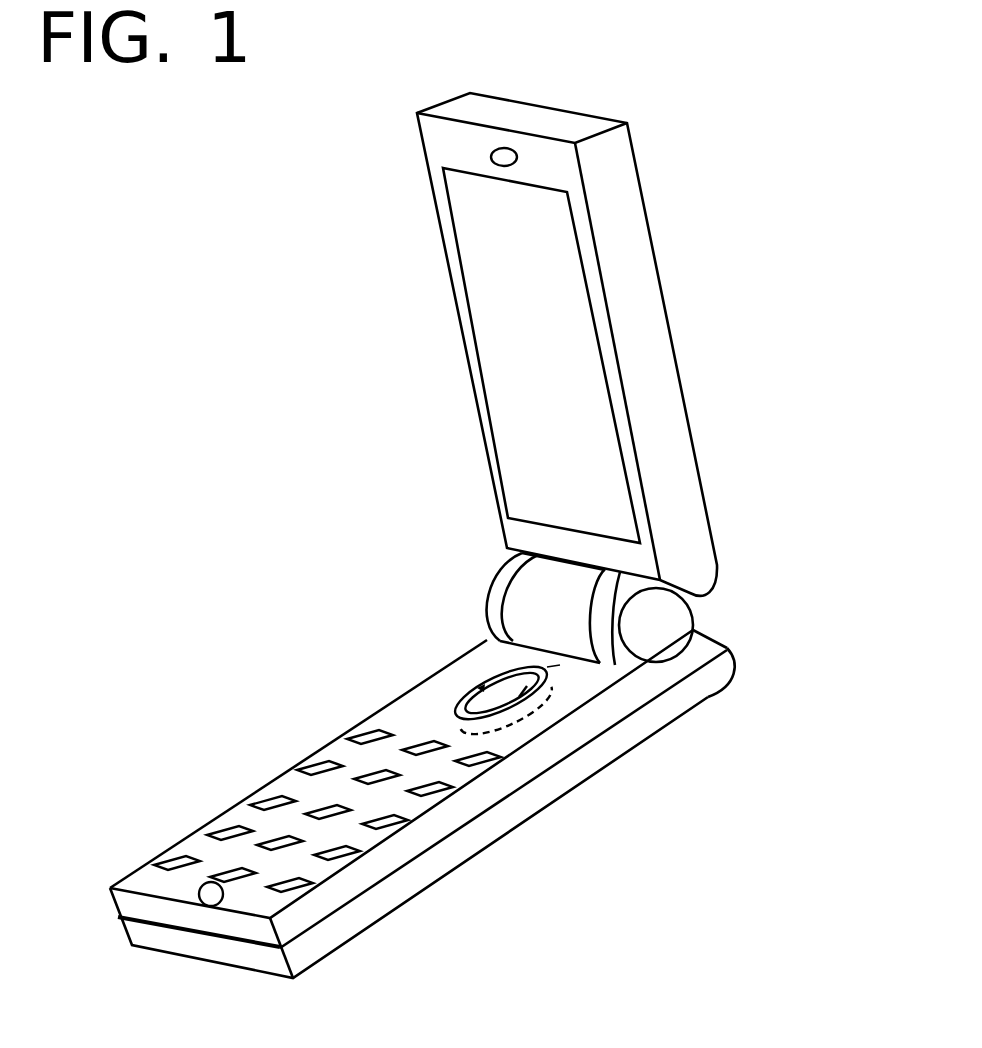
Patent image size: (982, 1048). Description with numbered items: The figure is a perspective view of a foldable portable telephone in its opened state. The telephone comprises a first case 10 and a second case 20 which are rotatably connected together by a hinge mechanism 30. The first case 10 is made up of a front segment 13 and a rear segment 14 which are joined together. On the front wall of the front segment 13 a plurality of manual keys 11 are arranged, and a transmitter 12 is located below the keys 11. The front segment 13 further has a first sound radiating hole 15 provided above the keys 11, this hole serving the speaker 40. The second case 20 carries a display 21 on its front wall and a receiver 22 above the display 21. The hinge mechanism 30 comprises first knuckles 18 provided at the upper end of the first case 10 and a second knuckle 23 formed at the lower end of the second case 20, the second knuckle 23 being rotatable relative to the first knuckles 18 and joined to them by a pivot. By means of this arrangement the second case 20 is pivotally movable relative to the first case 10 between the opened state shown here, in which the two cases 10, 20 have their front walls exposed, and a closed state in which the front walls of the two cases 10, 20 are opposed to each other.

The first case 10 is at (444, 804).
The manual keys 11 is at (360, 733).
The transmitter 12 is at (207, 897).
The front segment 13 is at (530, 763).
The rear segment 14 is at (498, 822).
The first sound radiating hole 15 is at (473, 690).
The first knuckles 18 is at (487, 605).
The second case 20 is at (657, 314).
The display 21 is at (497, 338).
The receiver 22 is at (493, 156).
The second knuckle 23 is at (523, 590).
The hinge mechanism 30 is at (733, 613).
The speaker 40 is at (547, 667).